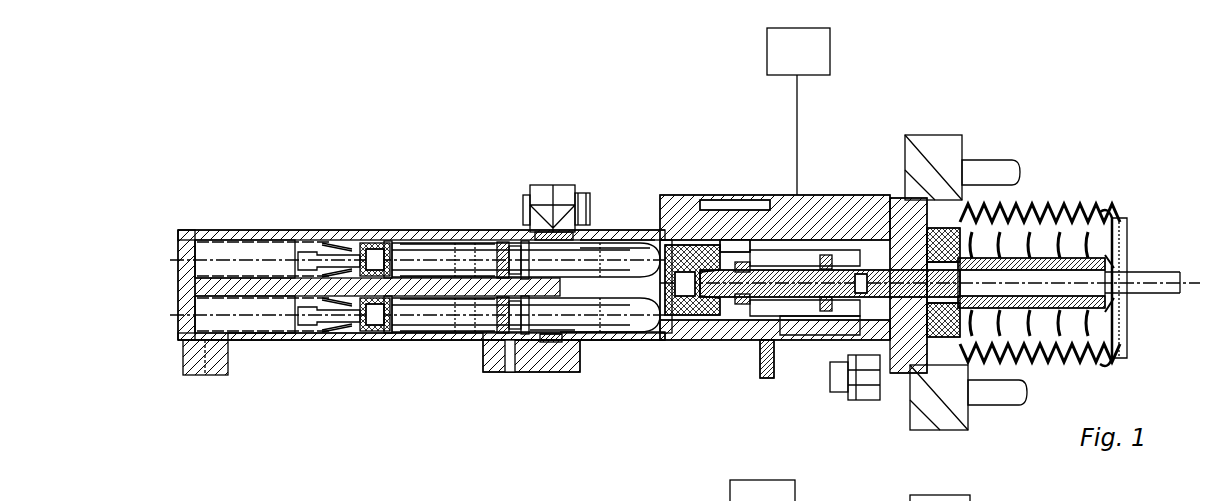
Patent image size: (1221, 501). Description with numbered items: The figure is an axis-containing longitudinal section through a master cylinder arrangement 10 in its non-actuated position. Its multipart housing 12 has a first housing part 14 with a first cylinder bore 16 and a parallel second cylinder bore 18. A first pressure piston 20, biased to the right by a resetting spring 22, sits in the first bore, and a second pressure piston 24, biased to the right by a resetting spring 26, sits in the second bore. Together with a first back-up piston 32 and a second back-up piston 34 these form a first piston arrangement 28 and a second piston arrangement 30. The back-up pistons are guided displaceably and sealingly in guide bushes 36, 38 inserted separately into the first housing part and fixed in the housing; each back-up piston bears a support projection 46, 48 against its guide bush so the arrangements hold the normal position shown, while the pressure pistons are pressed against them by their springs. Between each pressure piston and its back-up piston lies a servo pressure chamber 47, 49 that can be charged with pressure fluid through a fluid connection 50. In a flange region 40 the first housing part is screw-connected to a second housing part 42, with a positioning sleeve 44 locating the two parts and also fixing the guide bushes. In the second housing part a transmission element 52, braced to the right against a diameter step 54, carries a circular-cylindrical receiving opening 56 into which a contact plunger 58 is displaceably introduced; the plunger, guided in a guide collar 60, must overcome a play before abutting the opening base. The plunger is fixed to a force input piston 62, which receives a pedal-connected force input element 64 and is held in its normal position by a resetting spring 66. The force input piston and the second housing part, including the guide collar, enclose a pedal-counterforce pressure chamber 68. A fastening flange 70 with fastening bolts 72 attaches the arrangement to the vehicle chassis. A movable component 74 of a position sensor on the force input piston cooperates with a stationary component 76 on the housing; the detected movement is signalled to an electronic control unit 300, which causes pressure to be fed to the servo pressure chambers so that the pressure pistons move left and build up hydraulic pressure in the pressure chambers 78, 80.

The master cylinder arrangement 10 is at (1058, 178).
The housing 12 is at (258, 228).
The first housing part 14 is at (278, 342).
The first cylinder bore 16 is at (434, 234).
The second cylinder bore 18 is at (414, 340).
The first pressure piston 20 is at (372, 232).
The resetting spring 22 is at (300, 238).
The second pressure piston 24 is at (348, 318).
The resetting spring 26 is at (310, 334).
The first piston arrangement 28 is at (478, 232).
The second piston arrangement 30 is at (490, 342).
The first back-up piston 32 is at (627, 232).
The second back-up piston 34 is at (625, 345).
The guide bush 36 is at (586, 230).
The guide bush 38 is at (573, 342).
The flange region 40 is at (548, 180).
The second housing part 42 is at (690, 342).
The positioning sleeve 44 is at (530, 374).
The support projection 46 is at (522, 234).
The servo pressure chamber 47 is at (458, 230).
The support projection 48 is at (500, 372).
The servo pressure chamber 49 is at (458, 328).
The fluid connection 50 is at (520, 374).
The transmission element 52 is at (690, 196).
The diameter step 54 is at (677, 350).
The receiving opening 56 is at (750, 250).
The contact plunger 58 is at (805, 268).
The guide collar 60 is at (808, 310).
The force input piston 62 is at (880, 393).
The force input element 64 is at (1140, 278).
The resetting spring 66 is at (852, 262).
The pedal-counterforce pressure chamber 68 is at (838, 335).
The fastening flange 70 is at (935, 138).
The fastening bolts 72 is at (1003, 165).
The movable component of position sensor 74 is at (848, 378).
The stationary component of position sensor 76 is at (720, 198).
The pressure chamber 78 is at (240, 240).
The pressure chamber 80 is at (186, 352).
The electronic control unit 300 is at (832, 50).